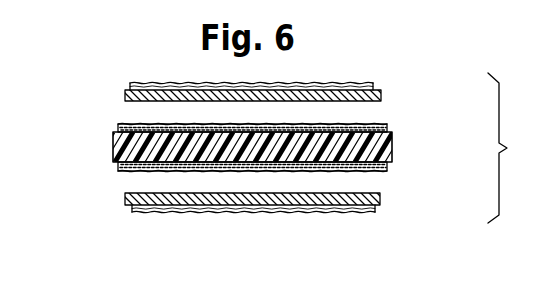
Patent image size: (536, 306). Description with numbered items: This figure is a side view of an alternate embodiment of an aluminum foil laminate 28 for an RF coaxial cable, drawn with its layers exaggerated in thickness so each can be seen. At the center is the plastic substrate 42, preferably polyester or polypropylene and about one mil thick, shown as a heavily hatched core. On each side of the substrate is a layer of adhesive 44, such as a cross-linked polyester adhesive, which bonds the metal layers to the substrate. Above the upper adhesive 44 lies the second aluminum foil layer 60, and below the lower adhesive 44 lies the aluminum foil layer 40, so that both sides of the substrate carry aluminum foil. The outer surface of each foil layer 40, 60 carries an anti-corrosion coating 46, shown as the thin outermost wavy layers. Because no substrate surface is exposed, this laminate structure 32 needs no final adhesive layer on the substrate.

The aluminum foil laminate 28 is at (222, 72).
The laminate structure 32 is at (222, 180).
The aluminum foil layer 40 is at (125, 197).
The plastic substrate 42 is at (392, 148).
The adhesive 44 is at (372, 122).
The anti-corrosion coating 46 is at (353, 82).
The second aluminum foil layer 60 is at (125, 95).